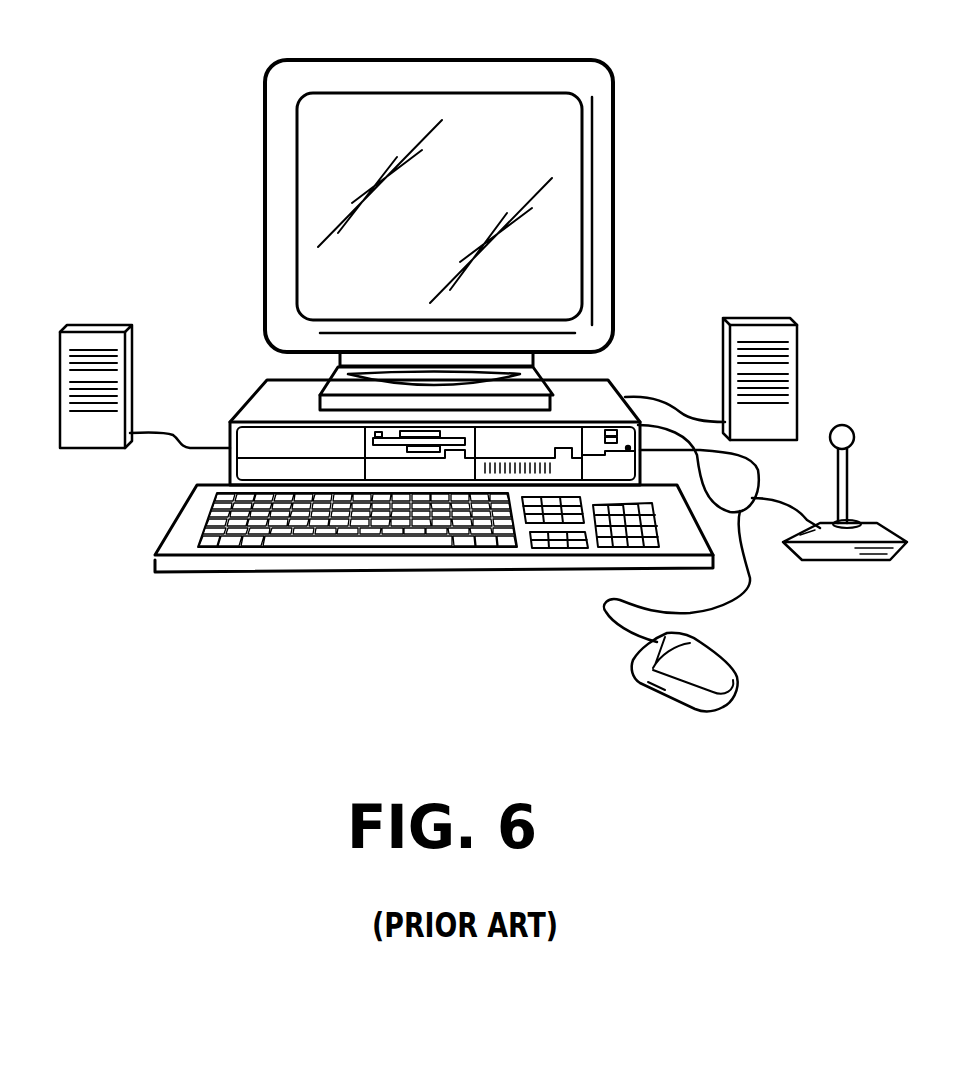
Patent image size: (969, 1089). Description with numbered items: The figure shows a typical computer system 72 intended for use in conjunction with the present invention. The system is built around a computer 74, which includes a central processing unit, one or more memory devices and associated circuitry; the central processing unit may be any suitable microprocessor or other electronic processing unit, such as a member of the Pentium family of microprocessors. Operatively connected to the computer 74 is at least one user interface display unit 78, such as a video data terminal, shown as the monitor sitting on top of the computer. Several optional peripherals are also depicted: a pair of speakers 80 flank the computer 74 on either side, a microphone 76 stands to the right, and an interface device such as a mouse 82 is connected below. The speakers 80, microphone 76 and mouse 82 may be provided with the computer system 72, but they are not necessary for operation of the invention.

The computer system 72 is at (640, 267).
The computer 74 is at (237, 421).
The microphone 76 is at (820, 561).
The user interface display unit 78 is at (397, 61).
The speakers 80 is at (90, 326).
The mouse 82 is at (700, 716).